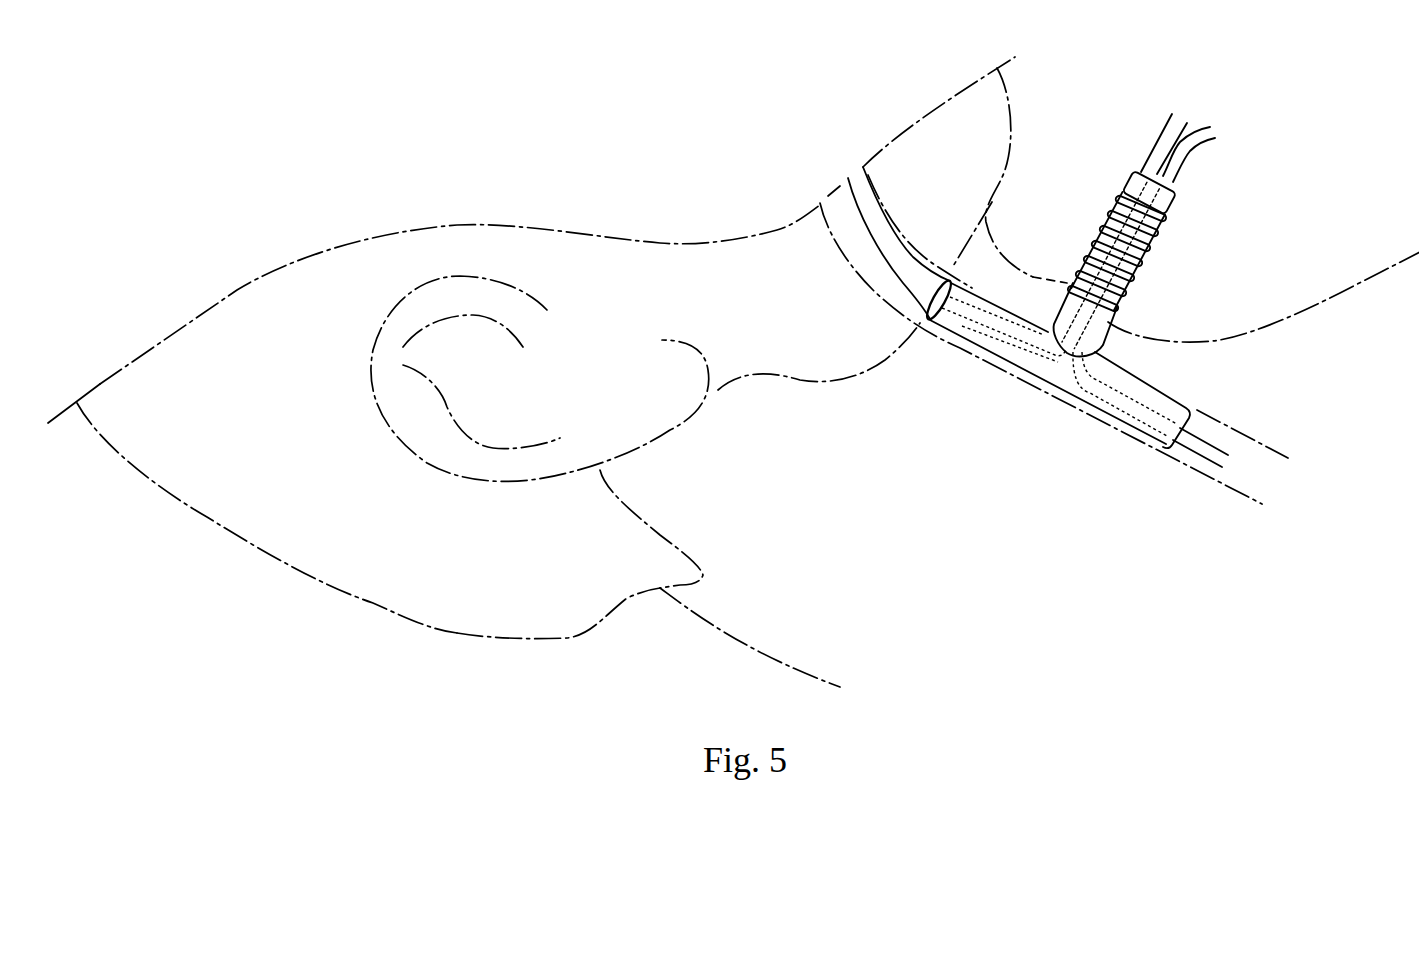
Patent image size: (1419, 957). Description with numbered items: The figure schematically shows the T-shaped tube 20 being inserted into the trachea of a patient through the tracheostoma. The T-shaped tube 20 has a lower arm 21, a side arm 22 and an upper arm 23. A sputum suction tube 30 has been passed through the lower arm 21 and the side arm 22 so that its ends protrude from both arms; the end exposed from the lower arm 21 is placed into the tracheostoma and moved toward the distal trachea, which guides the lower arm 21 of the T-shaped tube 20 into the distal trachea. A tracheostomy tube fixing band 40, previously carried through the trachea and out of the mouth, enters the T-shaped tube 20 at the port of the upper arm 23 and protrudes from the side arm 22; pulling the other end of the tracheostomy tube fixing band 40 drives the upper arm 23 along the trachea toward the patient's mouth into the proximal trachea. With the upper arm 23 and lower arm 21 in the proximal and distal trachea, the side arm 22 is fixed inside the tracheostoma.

The T-shaped tube 20 is at (1115, 293).
The lower arm 21 is at (1147, 397).
The side arm 22 is at (1130, 173).
The upper arm 23 is at (997, 310).
The sputum suction tube 30 is at (1188, 158).
The tracheostomy tube fixing band 40 is at (1160, 145).